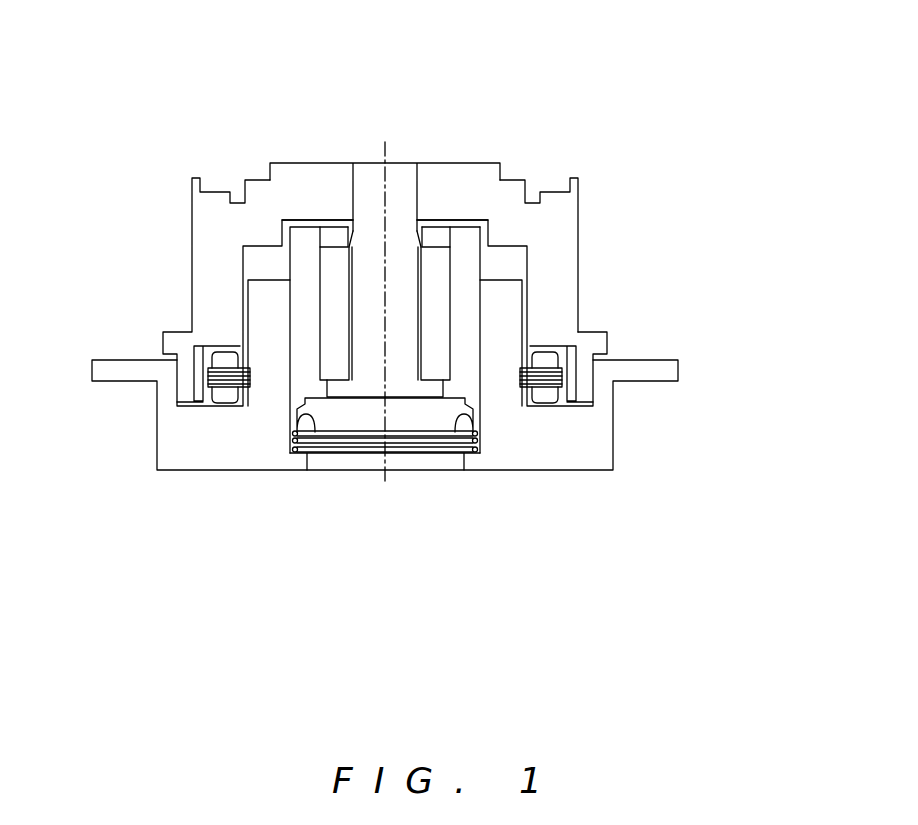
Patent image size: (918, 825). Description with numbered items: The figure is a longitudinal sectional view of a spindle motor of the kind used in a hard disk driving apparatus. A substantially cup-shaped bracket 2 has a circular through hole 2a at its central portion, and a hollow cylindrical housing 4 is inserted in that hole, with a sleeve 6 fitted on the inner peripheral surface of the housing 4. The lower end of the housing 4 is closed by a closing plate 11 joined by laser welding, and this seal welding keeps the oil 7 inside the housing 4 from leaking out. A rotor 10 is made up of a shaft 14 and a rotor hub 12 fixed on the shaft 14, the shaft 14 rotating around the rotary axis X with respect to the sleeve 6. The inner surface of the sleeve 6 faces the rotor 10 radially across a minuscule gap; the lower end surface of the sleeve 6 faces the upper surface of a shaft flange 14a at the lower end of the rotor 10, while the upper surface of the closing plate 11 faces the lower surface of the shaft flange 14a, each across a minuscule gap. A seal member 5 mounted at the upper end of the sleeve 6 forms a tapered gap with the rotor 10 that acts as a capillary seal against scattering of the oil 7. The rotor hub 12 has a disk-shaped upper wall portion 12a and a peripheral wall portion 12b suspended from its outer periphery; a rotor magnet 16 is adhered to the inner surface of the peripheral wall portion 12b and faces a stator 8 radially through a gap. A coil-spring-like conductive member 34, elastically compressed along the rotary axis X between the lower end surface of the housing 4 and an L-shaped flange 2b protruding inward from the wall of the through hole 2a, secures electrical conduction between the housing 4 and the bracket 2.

The rotary axis X is at (371, 142).
The bracket 2 is at (588, 445).
The circular through hole 2a is at (472, 370).
The L-shaped flange 2b is at (298, 462).
The housing 4 is at (467, 250).
The seal member 5 is at (333, 242).
The sleeve 6 is at (337, 285).
The oil 7 is at (322, 385).
The stator 8 is at (217, 375).
The rotor 10 is at (403, 140).
The closing plate 11 is at (333, 420).
The rotor hub 12 is at (430, 178).
The upper wall portion 12a is at (477, 192).
The peripheral wall portion 12b is at (553, 328).
The shaft 14 is at (410, 337).
The shaft flange 14a is at (425, 388).
The rotor magnet 16 is at (573, 360).
The conductive member 34 is at (420, 450).